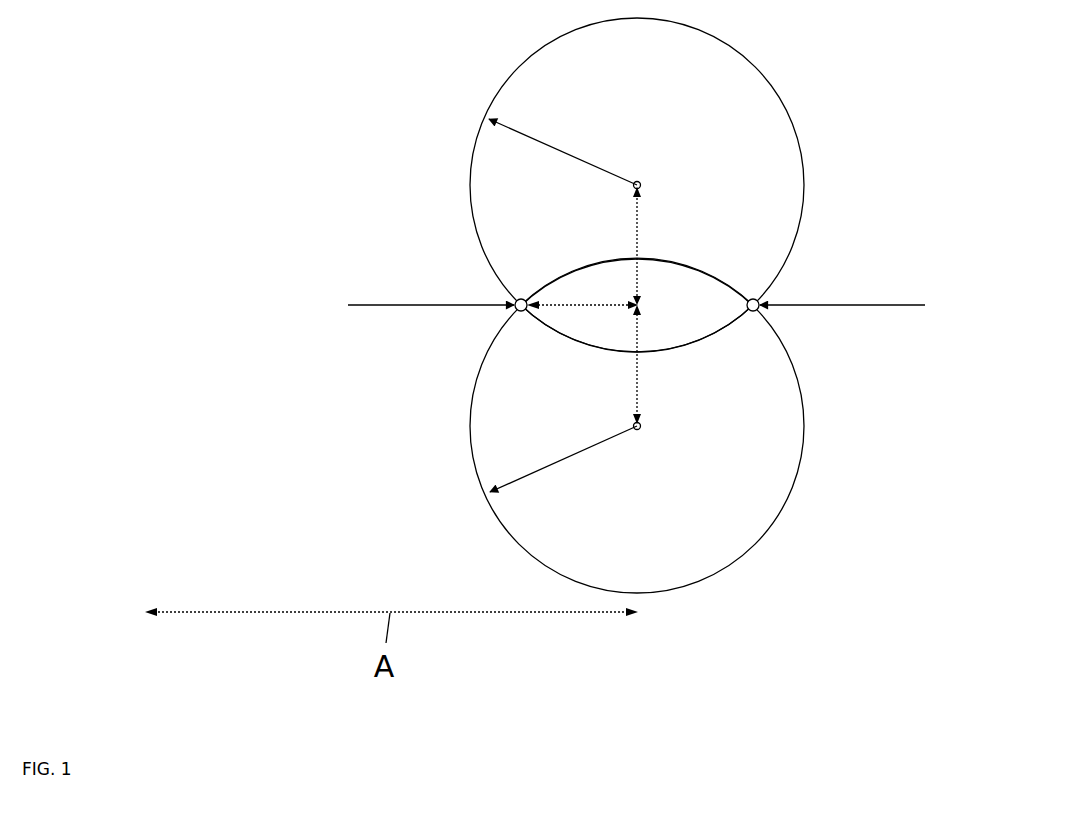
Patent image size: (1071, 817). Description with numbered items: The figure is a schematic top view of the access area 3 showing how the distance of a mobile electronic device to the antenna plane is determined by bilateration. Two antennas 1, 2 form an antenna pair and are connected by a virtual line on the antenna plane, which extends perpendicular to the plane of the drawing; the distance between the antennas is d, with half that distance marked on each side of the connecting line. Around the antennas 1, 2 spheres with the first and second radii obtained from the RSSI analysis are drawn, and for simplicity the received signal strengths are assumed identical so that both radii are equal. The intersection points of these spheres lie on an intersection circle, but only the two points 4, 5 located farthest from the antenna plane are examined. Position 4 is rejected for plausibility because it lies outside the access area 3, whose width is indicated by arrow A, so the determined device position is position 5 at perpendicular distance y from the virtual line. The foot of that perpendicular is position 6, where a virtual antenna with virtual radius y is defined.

The antenna 1 is at (647, 183).
The antenna 2 is at (647, 427).
The access area 3 is at (515, 305).
The intersection point 4 is at (856, 306).
The intersection point 5 is at (414, 306).
The position of the virtual antenna 6 is at (643, 303).